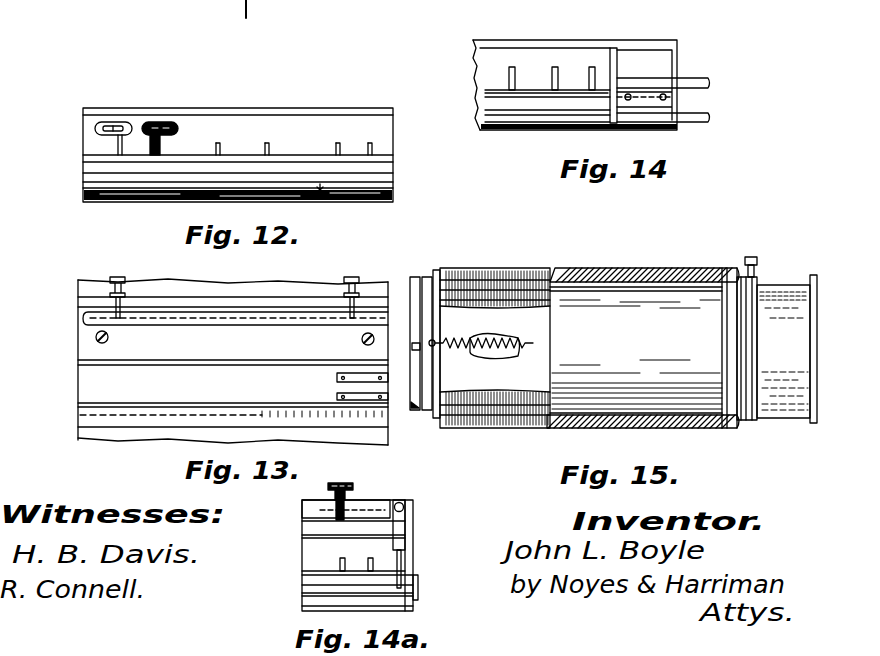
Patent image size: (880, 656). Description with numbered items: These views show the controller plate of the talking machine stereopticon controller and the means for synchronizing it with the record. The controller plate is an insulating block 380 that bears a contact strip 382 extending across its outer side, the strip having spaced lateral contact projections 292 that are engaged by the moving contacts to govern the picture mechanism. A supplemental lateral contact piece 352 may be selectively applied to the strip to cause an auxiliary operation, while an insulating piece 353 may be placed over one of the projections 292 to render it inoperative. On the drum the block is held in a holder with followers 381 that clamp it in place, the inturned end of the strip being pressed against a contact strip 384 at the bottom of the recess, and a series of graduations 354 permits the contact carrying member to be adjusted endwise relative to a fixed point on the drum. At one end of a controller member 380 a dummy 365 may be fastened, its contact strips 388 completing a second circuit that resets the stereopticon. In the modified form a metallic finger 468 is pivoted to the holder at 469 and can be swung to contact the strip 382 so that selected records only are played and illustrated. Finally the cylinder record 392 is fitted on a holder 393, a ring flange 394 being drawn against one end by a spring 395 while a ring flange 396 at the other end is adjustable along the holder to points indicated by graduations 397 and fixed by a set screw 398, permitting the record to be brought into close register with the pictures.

In FIG. 12, the insulating block 380 is at (395, 130).
In FIG. 14, the insulating block 380 is at (498, 58).
In FIG. 12, the contact strip 382 is at (92, 176).
In FIG. 14, the contact strip 382 is at (490, 108).
In FIG. 14A, the contact strip 382 is at (320, 598).
In FIG. 12, the contact projection 292 is at (336, 149).
In FIG. 14, the contact projection 292 is at (560, 66).
In FIG. 14A, the contact projection 292 is at (318, 567).
In FIG. 12, the supplemental lateral contact piece 352 is at (120, 122).
In FIG. 12, the insulating piece 353 is at (166, 124).
In FIG. 14, the dummy 365 is at (665, 66).
In FIG. 14, the contact strip 388 is at (707, 118).
In FIG. 13, the follower 381 is at (259, 325).
In FIG. 14A, the follower 381 is at (310, 527).
In FIG. 13, the contact strip 384 is at (338, 395).
In FIG. 13, the graduations 354 is at (306, 411).
In FIG. 15, the record 392 is at (680, 268).
In FIG. 15, the holder 393 is at (598, 318).
In FIG. 15, the ring flange 394 is at (437, 268).
In FIG. 15, the spring 395 is at (492, 338).
In FIG. 15, the ring flange 396 is at (759, 280).
In FIG. 15, the graduations 397 is at (781, 287).
In FIG. 15, the set screw 398 is at (751, 257).
In FIG. 14A, the metallic finger 468 is at (405, 548).
In FIG. 14A, the pivot 469 is at (405, 505).